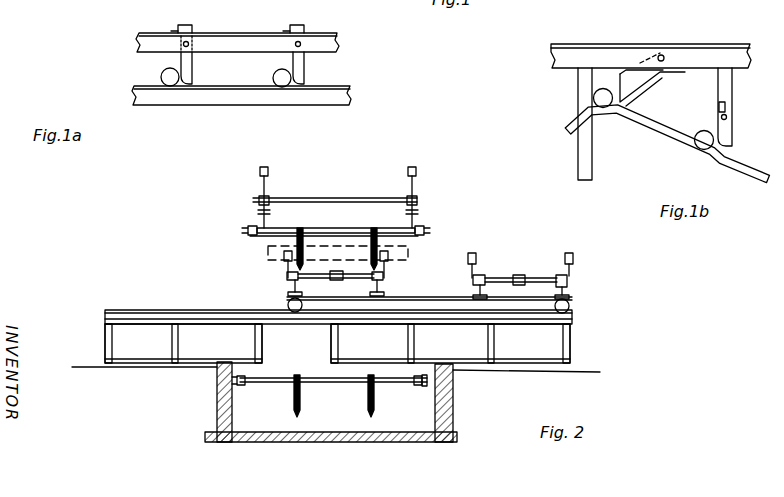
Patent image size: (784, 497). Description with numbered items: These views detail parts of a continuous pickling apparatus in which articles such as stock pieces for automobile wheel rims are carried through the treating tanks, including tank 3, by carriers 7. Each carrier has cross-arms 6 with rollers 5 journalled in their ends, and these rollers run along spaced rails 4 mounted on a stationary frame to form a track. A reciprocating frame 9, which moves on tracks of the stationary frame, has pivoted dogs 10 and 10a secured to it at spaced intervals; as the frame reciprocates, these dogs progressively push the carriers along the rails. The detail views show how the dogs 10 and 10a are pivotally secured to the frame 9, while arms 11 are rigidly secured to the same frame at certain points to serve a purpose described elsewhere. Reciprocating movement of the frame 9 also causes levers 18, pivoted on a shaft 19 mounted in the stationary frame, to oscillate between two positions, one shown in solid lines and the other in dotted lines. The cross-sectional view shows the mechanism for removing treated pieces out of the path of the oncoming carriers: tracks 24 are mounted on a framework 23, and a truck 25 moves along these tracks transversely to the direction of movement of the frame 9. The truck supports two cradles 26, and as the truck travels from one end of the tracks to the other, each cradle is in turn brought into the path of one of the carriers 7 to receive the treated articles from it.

In FIG. 2, the tank 3 is at (423, 390).
In FIG. 1B, the rails 4 is at (665, 141).
In FIG. 2, the rails 4 is at (248, 236).
In FIG. 1A, the rollers 5 is at (160, 76).
In FIG. 1B, the rollers 5 is at (606, 107).
In FIG. 2, the rollers 5 is at (247, 227).
In FIG. 2, the cross-arms 6 is at (277, 231).
In FIG. 2, the carriers 7 is at (388, 241).
In FIG. 1B, the reciprocating frame 9 is at (705, 48).
In FIG. 1A, the pivoted dogs 10 is at (193, 70).
In FIG. 1B, the pivoted dogs 10 is at (732, 128).
In FIG. 1B, the pivoted dog 10a is at (625, 90).
In FIG. 1B, the arms 11 is at (578, 91).
In FIG. 2, the levers 18 is at (262, 184).
In FIG. 2, the shaft 19 is at (355, 198).
In FIG. 2, the framework 23 is at (103, 329).
In FIG. 2, the tracks 24 is at (183, 310).
In FIG. 2, the truck 25 is at (500, 298).
In FIG. 2, the cradles 26 is at (388, 276).